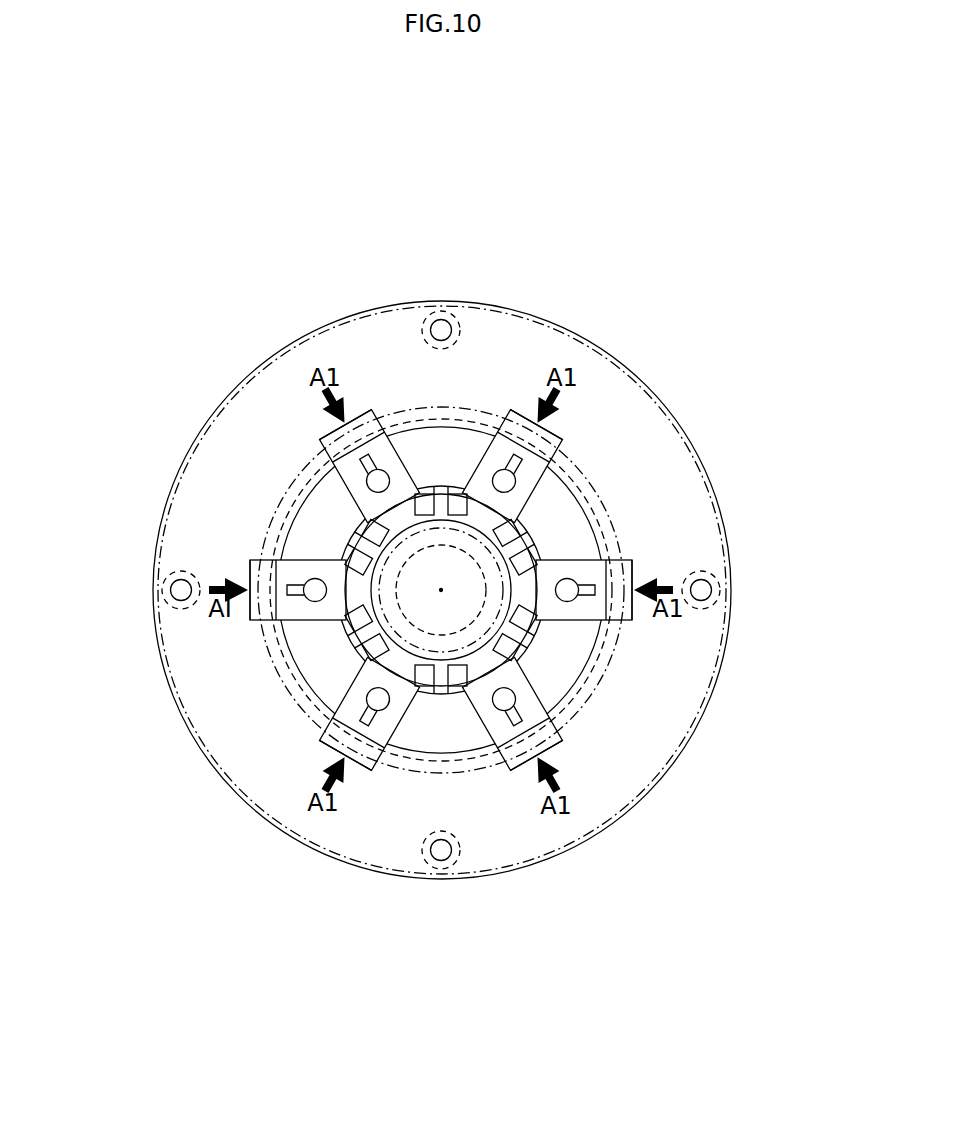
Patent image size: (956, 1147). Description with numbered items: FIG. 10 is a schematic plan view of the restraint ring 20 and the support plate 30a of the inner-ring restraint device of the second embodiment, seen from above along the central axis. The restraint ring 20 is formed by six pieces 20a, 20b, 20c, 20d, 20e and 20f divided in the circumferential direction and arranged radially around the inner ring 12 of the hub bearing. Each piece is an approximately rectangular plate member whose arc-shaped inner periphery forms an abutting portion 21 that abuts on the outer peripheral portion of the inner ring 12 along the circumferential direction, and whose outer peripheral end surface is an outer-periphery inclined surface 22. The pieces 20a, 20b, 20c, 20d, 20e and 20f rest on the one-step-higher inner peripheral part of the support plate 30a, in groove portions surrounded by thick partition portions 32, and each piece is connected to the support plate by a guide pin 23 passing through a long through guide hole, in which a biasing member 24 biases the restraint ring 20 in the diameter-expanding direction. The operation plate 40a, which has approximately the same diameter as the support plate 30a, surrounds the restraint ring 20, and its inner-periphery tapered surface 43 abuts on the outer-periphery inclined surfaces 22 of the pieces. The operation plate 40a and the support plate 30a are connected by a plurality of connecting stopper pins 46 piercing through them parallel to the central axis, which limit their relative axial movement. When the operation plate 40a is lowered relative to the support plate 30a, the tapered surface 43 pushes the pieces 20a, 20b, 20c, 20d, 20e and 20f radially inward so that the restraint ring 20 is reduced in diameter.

The inner ring 12 is at (441, 590).
The restraint ring 20 is at (443, 592).
The piece 20a is at (572, 556).
The piece 20b is at (490, 737).
The piece 20c is at (343, 700).
The piece 20d is at (283, 566).
The piece 20e is at (383, 452).
The piece 20f is at (500, 453).
The abutting portion 21 is at (425, 500).
The outer-periphery inclined surface 22 is at (335, 465).
The guide pin 23 is at (612, 558).
The biasing member 24 is at (628, 562).
The support plate 30a is at (156, 627).
The partition portion 32 is at (457, 452).
The operation plate 40a is at (235, 386).
The inner-periphery tapered surface 43 is at (615, 651).
The connecting stopper pin 46 is at (440, 319).